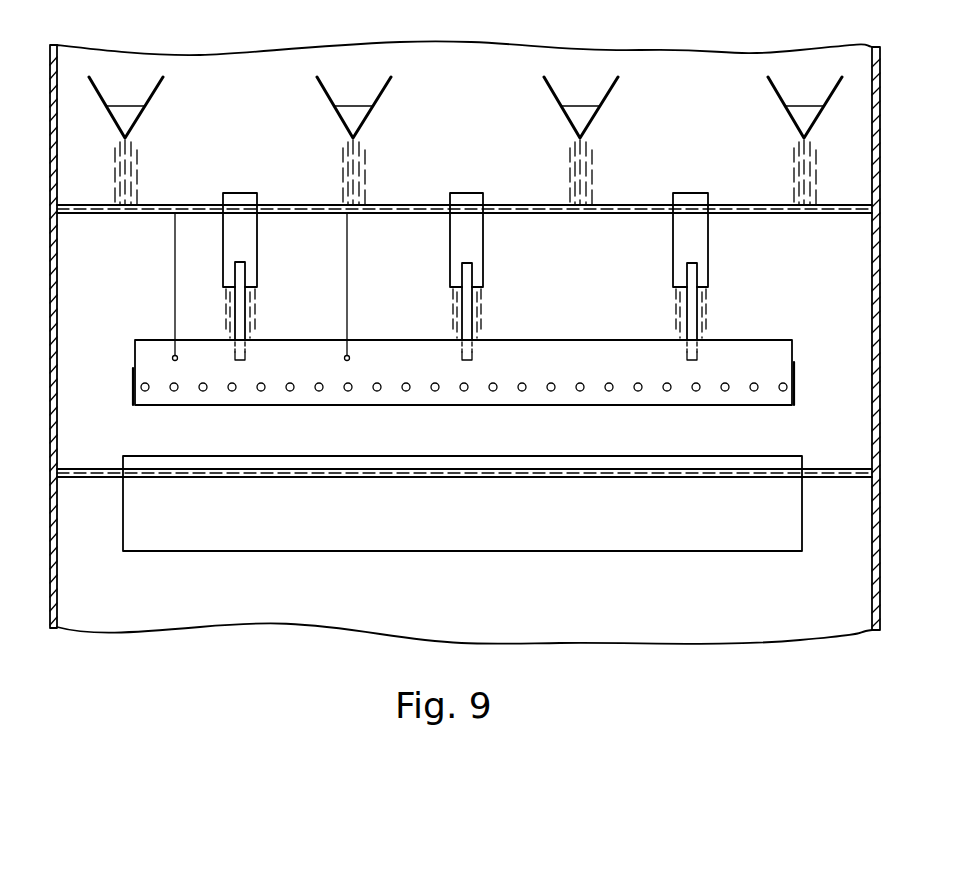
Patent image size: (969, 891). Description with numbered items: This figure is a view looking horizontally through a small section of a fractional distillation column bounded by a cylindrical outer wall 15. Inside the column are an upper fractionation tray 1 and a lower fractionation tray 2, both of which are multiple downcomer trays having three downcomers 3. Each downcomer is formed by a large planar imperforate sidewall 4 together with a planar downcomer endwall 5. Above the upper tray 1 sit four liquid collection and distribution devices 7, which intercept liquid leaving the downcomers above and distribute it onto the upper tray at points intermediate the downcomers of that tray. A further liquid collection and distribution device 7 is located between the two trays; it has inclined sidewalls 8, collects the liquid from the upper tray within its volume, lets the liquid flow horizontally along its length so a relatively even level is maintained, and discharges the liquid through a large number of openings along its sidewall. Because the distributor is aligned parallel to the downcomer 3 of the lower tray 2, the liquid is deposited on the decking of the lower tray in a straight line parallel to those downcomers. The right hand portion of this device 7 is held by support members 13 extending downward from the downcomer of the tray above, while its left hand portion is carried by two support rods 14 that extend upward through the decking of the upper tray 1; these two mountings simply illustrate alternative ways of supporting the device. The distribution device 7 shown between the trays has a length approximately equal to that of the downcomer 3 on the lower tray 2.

The upper fractionation tray 1 is at (797, 214).
The lower fractionation tray 2 is at (817, 479).
The downcomer 3 is at (486, 251).
The planar imperforate sidewall 4 is at (482, 527).
The planar downcomer endwall 5 is at (242, 218).
The liquid collection and distribution device 7 is at (139, 117).
The inclined sidewall 8 is at (566, 358).
The support member 13 is at (474, 320).
The support rod 14 is at (175, 283).
The cylindrical outer wall 15 is at (879, 62).